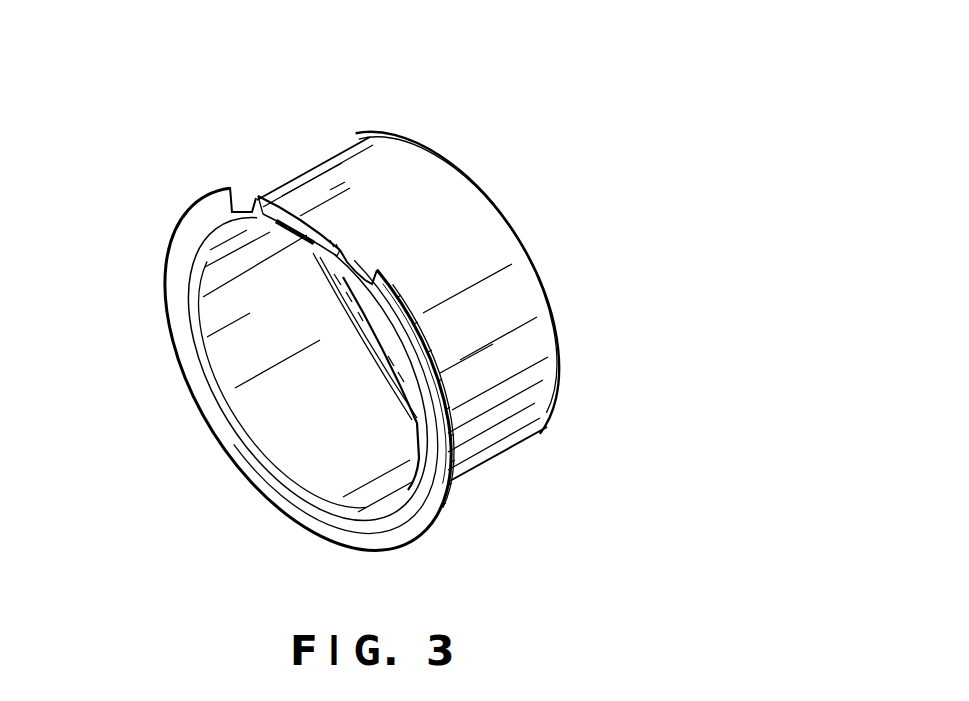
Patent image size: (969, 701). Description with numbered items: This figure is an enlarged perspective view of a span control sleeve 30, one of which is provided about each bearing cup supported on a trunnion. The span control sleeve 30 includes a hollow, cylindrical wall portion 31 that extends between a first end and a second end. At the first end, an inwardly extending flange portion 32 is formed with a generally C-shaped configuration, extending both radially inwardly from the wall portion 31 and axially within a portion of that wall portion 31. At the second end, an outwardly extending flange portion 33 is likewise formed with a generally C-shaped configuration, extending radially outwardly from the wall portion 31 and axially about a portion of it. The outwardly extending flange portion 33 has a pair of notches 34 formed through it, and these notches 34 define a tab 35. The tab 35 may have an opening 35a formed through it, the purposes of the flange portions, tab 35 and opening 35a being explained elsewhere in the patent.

The span control sleeve 30 is at (539, 134).
The hollow cylindrical wall portion 31 is at (525, 347).
The inwardly extending flange portion 32 is at (367, 343).
The outwardly extending flange portion 33 is at (172, 315).
The notches 34 is at (236, 193).
The tab 35 is at (306, 205).
The opening 35a is at (288, 219).